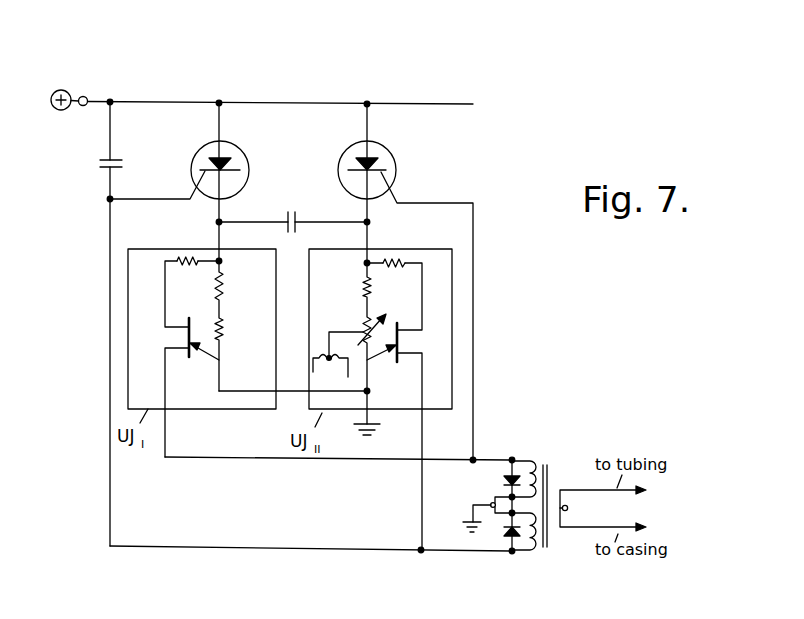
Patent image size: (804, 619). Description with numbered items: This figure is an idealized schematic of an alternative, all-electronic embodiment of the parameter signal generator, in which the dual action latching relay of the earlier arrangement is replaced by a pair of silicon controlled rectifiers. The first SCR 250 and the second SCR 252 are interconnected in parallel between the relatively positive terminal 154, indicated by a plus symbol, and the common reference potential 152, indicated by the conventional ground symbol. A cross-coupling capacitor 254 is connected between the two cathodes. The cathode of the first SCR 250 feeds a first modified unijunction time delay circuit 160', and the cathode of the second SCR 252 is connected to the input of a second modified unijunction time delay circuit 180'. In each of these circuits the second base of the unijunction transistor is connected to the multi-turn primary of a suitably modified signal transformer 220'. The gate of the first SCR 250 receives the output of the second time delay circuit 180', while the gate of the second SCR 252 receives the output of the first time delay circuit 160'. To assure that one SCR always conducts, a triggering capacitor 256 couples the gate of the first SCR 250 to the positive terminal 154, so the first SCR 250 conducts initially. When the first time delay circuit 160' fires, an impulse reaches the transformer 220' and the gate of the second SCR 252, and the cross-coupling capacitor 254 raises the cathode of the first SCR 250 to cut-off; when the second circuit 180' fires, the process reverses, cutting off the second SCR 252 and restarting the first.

The relatively positive terminal 154 is at (87, 98).
The triggering capacitor 256 is at (121, 159).
The first SCR 250 is at (240, 147).
The second SCR 252 is at (388, 152).
The cross-coupling capacitor 254 is at (303, 200).
The first modified unijunction time delay circuit 160' is at (247, 339).
The second modified unijunction time delay circuit 180' is at (380, 386).
The common reference potential 152 is at (360, 423).
The signal transformer 220' is at (554, 489).